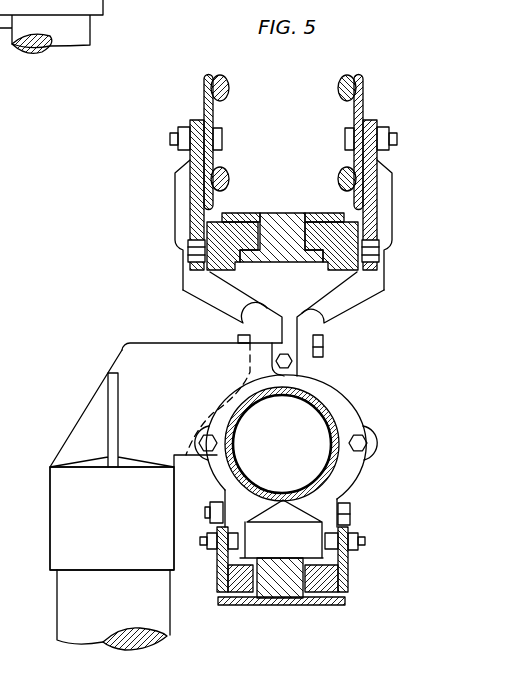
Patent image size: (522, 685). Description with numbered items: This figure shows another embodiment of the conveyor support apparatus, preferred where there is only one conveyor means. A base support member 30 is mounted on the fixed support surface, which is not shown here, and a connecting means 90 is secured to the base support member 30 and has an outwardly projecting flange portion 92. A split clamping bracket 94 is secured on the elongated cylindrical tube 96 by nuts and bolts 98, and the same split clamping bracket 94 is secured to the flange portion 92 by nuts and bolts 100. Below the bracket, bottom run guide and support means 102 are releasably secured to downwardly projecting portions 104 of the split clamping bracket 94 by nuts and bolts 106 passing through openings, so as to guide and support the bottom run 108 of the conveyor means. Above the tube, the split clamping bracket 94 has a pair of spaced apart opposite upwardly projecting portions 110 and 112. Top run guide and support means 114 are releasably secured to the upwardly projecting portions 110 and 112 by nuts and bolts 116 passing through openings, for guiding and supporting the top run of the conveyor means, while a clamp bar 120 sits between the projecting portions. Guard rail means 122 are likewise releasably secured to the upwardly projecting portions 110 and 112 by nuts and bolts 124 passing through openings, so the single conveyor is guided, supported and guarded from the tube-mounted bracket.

The base support member 30 is at (65, 600).
The connecting means 90 is at (62, 516).
The flange portion 92 is at (186, 357).
The split clamping bracket 94 is at (345, 416).
The elongated cylindrical tube 96 is at (334, 468).
The nuts and bolts 98 is at (325, 345).
The nuts and bolts 100 is at (292, 362).
The bottom run guide and support means 102 is at (348, 584).
The downwardly projecting portions 104 is at (238, 538).
The nuts and bolts 106 is at (350, 557).
The bottom run 108 is at (290, 600).
The upwardly projecting portion 110 is at (188, 240).
The upwardly projecting portion 112 is at (380, 240).
The top run guide and support means 114 is at (215, 265).
The nuts and bolts 116 is at (188, 257).
The clamp bar 120 is at (280, 214).
The guard rail means 122 is at (195, 106).
The nuts and bolts 124 is at (176, 140).